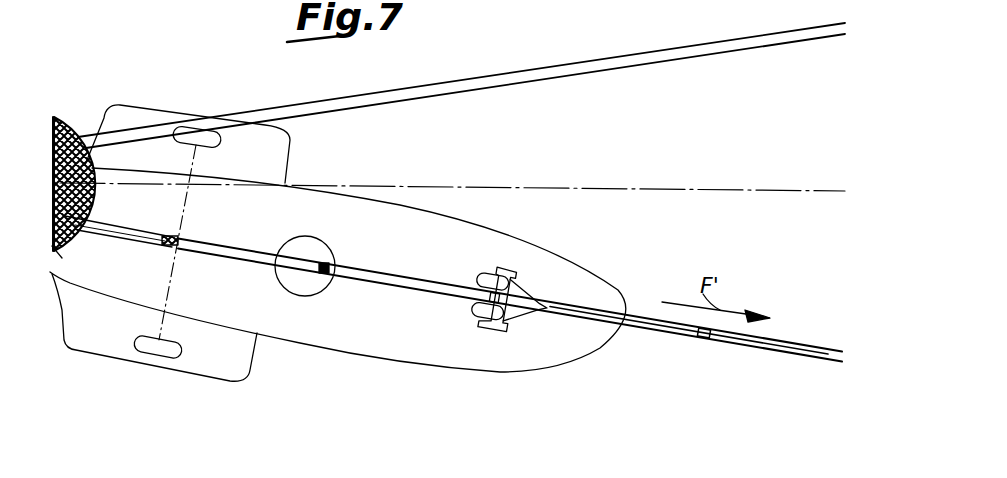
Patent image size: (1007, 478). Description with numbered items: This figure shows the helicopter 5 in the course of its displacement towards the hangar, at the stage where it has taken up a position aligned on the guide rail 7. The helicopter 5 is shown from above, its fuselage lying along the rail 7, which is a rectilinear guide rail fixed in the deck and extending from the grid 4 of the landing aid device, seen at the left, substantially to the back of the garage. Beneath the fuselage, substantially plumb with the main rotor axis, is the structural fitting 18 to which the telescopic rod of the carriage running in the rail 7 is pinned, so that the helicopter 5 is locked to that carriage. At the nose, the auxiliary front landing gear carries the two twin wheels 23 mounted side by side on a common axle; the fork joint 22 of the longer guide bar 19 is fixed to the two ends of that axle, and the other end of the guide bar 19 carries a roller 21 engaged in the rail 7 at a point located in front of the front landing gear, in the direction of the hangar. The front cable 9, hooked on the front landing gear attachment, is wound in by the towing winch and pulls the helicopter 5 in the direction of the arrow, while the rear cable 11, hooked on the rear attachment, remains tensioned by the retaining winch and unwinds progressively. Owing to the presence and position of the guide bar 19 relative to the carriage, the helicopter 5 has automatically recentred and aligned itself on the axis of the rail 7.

The grid 4 is at (63, 131).
The helicopter 5 is at (360, 354).
The guide rail 7 is at (646, 58).
The front cable 9 is at (760, 346).
The rear cable 11 is at (108, 235).
The structural fitting 18 is at (320, 274).
The longer guide bar 19 is at (587, 313).
The roller 21 is at (705, 337).
The fork joint 22 is at (518, 313).
The twin wheels 23 is at (476, 283).